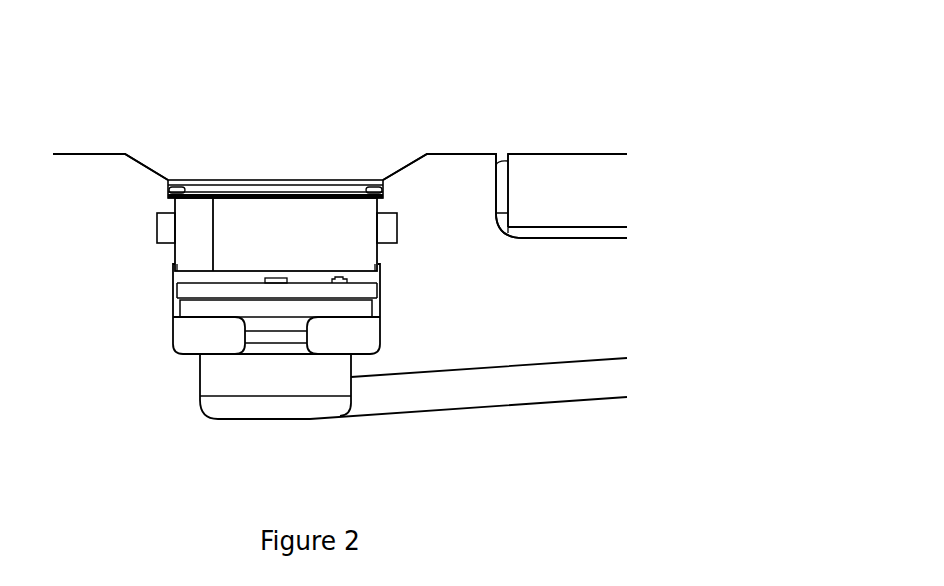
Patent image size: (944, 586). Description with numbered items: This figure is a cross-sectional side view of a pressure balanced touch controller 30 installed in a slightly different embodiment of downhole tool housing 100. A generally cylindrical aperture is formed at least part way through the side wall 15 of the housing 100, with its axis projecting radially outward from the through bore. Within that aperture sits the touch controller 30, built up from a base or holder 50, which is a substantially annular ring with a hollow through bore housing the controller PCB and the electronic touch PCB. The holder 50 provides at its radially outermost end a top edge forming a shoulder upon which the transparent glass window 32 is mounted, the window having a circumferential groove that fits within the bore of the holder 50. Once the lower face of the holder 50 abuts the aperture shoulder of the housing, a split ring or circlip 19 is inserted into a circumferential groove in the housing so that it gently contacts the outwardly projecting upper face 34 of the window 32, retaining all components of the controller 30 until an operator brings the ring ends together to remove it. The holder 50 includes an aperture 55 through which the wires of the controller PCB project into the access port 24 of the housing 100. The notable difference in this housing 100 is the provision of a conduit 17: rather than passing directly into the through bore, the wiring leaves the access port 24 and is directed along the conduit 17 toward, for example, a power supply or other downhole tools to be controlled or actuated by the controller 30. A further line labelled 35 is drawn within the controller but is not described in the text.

The side wall 15 is at (340, 226).
The conduit 17 is at (468, 388).
The split ring or circlip 19 is at (375, 190).
The access port 24 is at (350, 372).
The touch controller 30 is at (372, 272).
The transparent glass window 32 is at (288, 228).
The upper face 34 is at (185, 189).
The piston interface 35 is at (213, 198).
The holder 50 is at (363, 333).
The aperture 55 is at (268, 333).
The downhole tool housing 100 is at (117, 355).